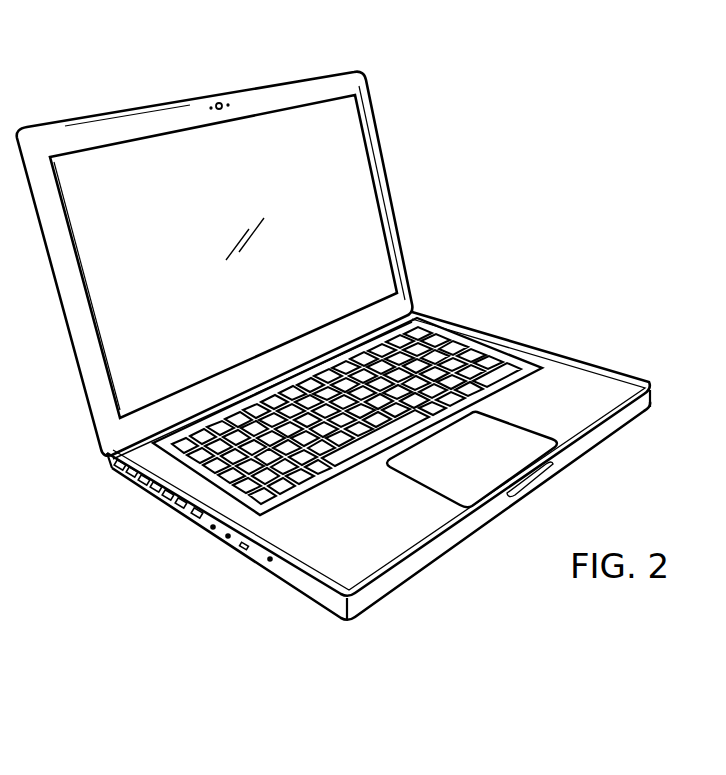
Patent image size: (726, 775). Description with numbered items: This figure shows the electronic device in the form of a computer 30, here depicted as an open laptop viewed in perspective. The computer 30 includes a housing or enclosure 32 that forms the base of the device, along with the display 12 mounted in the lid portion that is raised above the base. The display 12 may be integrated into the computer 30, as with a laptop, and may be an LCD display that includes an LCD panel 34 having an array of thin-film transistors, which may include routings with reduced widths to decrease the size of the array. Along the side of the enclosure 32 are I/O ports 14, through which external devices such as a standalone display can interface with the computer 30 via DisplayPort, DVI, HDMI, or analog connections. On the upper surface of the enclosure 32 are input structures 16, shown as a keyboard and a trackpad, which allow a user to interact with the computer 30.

The computer 30 is at (167, 56).
The display 12 is at (373, 196).
The LCD panel 34 is at (357, 160).
The housing or enclosure 32 is at (577, 366).
The I/O ports 14 is at (183, 512).
The input structures 16 is at (467, 353).